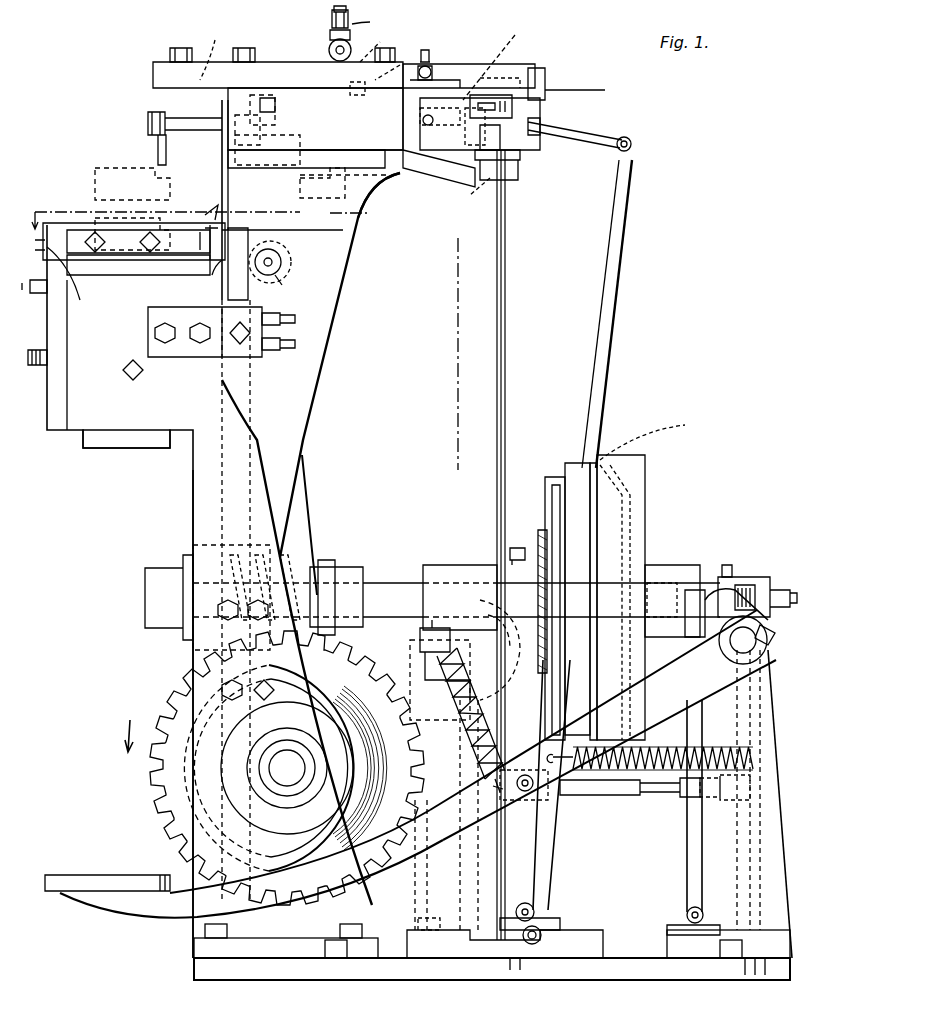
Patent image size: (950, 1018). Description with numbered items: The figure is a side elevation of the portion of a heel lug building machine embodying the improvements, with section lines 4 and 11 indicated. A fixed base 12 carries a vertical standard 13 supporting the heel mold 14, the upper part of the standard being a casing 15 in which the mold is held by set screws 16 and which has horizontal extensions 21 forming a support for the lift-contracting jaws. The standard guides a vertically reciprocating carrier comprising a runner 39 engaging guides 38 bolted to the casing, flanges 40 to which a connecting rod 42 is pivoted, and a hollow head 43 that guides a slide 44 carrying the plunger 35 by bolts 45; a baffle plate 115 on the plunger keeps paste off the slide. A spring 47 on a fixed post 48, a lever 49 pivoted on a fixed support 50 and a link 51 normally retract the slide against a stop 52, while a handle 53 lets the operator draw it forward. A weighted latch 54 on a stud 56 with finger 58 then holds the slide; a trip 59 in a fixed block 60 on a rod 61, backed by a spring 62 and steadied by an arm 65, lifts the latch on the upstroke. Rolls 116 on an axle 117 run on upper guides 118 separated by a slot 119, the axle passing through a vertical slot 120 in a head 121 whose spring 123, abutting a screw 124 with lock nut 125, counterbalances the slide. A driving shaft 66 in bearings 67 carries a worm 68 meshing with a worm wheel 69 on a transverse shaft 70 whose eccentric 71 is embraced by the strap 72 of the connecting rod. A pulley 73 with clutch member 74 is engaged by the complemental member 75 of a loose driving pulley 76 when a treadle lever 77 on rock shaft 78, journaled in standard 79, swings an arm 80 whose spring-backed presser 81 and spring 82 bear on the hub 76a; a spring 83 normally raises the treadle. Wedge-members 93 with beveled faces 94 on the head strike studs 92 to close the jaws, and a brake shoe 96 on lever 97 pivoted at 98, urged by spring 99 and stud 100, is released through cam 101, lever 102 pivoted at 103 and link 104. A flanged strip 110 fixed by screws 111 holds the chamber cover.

The section line 4 is at (210, 210).
The section line 11 is at (275, 262).
The fixed base 12 is at (432, 970).
The vertical standard 13 is at (192, 517).
The heel mold 14 is at (145, 448).
The casing 15 is at (87, 440).
The set screws 16 is at (45, 362).
The horizontal extensions 21 is at (187, 260).
The plunger 35 is at (110, 168).
The guides 38 is at (268, 300).
The runner 39 is at (240, 238).
The flanges 40 is at (310, 392).
The connecting rod 42 is at (300, 510).
The hollow head 43 is at (385, 185).
The slide 44 is at (368, 138).
The bolts 45 is at (270, 115).
The spring 47 is at (628, 770).
The fixed post 48 is at (762, 868).
The lever 49 is at (612, 285).
The fixed support 50 is at (533, 944).
The link 51 is at (615, 137).
The stop 52 is at (586, 90).
The handle 53 is at (150, 118).
The weighted latch 54 is at (398, 65).
The stud 56 is at (432, 60).
The finger 58 is at (448, 80).
The trip 59 is at (455, 105).
The fixed block 60 is at (498, 105).
The fixed vertical rod 61 is at (505, 392).
The spring 62 is at (545, 80).
The arm 65 is at (518, 172).
The driving shaft 66 is at (395, 585).
The bearings 67 is at (205, 555).
The worm 68 is at (333, 560).
The worm wheel 69 is at (155, 808).
The transverse shaft 70 is at (287, 768).
The eccentric 71 is at (340, 800).
The strap 72 is at (395, 640).
The pulley 73 is at (578, 462).
The frictional clutch member 74 is at (654, 432).
The complemental clutch member 75 is at (622, 485).
The driving pulley 76 is at (645, 497).
The hub 76a is at (685, 575).
The treadle lever 77 is at (140, 905).
The rock shaft 78 is at (743, 640).
The standard 79 is at (725, 930).
The arm 80 is at (765, 577).
The presser 81 is at (713, 590).
The spring 82 is at (745, 585).
The spring 83 is at (343, 707).
The studs 92 is at (234, 500).
The wedge-members 93 is at (225, 190).
The beveled faces 94 is at (215, 213).
The brake shoe 96 is at (540, 512).
The brake lever 97 is at (520, 845).
The pivot 98 is at (530, 905).
The spring 99 is at (440, 660).
The stud 100 is at (515, 625).
The cam 101 is at (603, 725).
The lever 102 is at (688, 852).
The pivot 103 is at (686, 912).
The link 104 is at (603, 800).
The flanged strip 110 is at (60, 228).
The screws 111 is at (60, 281).
The baffle plate 115 is at (385, 165).
The antifriction rolls 116 is at (342, 67).
The axle 117 is at (328, 52).
The upper guides 118 is at (278, 68).
The slot 119 is at (207, 51).
The vertical slot 120 is at (330, 42).
The head 121 is at (332, 28).
The spring 123 is at (377, 18).
The screw 124 is at (334, 10).
The lock nut 125 is at (445, 14).